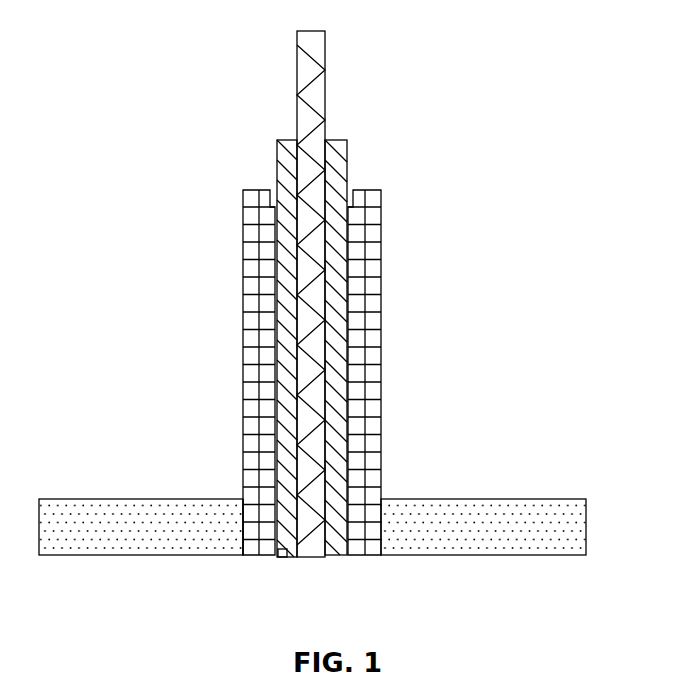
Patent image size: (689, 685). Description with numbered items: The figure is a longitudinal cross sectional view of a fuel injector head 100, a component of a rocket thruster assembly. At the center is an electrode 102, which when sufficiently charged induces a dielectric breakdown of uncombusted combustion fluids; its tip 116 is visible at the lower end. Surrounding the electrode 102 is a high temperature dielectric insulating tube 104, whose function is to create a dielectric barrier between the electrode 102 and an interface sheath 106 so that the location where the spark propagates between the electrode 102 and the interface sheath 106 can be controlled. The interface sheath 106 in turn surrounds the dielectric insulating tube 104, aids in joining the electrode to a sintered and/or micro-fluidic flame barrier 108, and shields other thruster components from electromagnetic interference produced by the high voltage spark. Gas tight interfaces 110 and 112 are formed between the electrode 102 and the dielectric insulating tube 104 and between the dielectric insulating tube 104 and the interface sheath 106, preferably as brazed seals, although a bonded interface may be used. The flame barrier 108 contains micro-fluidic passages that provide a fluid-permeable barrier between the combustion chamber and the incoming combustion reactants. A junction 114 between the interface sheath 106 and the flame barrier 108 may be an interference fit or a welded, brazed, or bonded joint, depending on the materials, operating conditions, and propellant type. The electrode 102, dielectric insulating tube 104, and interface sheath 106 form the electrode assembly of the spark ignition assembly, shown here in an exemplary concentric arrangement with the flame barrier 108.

The fuel injector head 100 is at (558, 30).
The electrode 102 is at (310, 70).
The dielectric insulating tube 104 is at (340, 316).
The interface sheath 106 is at (262, 333).
The sintered and/or micro-fluidic flame barrier 108 is at (530, 527).
The gas tight interface 110 is at (289, 135).
The gas tight interface 112 is at (356, 198).
The junction 114 is at (236, 523).
The tip 116 is at (274, 565).